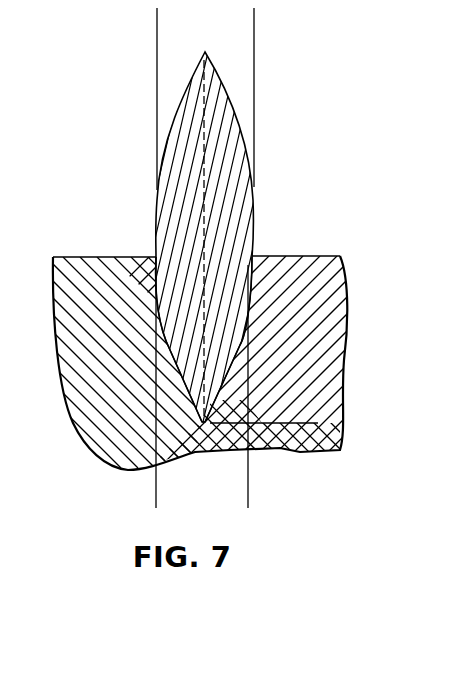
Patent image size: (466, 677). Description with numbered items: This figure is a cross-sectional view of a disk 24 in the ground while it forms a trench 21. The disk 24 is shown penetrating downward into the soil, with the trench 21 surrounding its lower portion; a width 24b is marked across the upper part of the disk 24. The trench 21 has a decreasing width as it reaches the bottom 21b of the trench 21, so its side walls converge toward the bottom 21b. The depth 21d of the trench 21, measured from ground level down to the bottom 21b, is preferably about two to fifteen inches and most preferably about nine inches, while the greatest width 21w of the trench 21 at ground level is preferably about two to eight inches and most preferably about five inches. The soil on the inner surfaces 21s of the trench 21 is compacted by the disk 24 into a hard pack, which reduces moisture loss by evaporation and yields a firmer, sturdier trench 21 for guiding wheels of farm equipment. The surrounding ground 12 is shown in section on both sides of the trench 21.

The body / substrate material 12 is at (80, 268).
The trench 21 is at (172, 303).
The inner surfaces of the trench 21s is at (172, 353).
The bottom of the trench 21b is at (110, 465).
The greatest width of the trench 21w is at (238, 498).
The depth of the trench 21d is at (314, 268).
The disk 24 is at (185, 127).
The blade width 24b is at (244, 13).